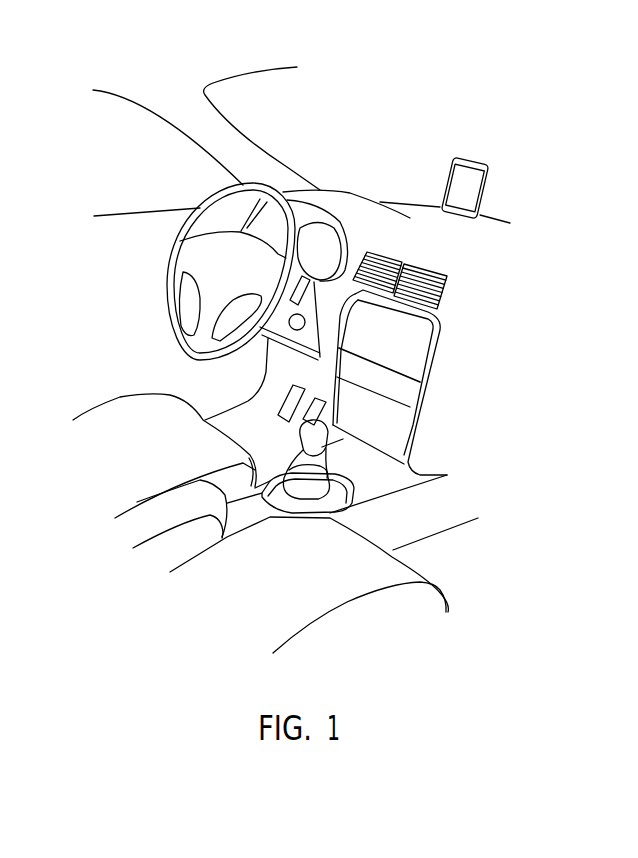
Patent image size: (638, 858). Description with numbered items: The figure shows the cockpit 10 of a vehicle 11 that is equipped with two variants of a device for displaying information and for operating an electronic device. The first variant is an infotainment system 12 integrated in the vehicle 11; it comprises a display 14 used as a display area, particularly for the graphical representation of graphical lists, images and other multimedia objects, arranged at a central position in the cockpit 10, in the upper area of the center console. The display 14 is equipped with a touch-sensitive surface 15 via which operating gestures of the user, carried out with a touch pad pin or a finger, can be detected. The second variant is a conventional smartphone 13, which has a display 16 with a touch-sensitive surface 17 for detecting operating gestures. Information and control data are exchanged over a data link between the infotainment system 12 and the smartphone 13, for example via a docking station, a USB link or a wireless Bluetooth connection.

The cockpit 10 is at (440, 106).
The vehicle 11 is at (100, 52).
The infotainment system 12 is at (424, 377).
The smartphone 13 is at (500, 190).
The display 14 is at (424, 377).
The touch-sensitive surface 15 is at (413, 349).
The display 16 is at (500, 188).
The touch-sensitive surface 17 is at (470, 193).